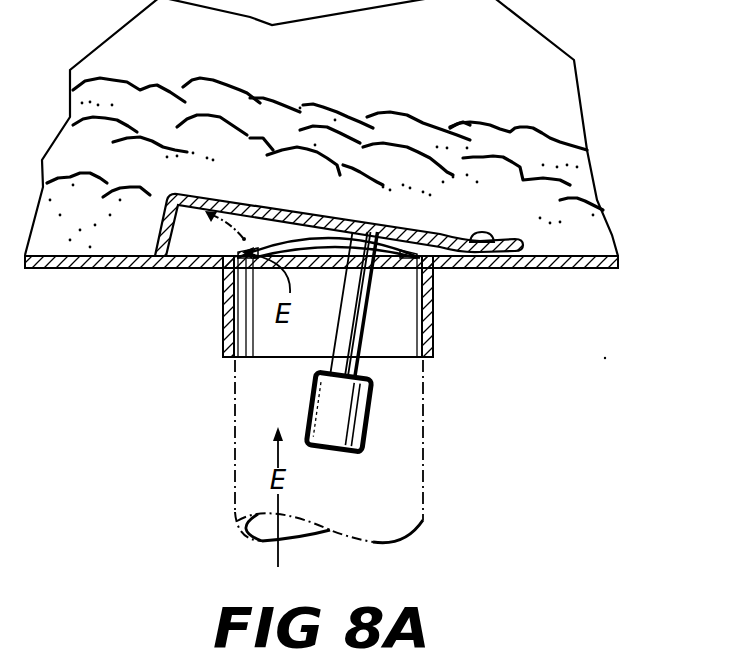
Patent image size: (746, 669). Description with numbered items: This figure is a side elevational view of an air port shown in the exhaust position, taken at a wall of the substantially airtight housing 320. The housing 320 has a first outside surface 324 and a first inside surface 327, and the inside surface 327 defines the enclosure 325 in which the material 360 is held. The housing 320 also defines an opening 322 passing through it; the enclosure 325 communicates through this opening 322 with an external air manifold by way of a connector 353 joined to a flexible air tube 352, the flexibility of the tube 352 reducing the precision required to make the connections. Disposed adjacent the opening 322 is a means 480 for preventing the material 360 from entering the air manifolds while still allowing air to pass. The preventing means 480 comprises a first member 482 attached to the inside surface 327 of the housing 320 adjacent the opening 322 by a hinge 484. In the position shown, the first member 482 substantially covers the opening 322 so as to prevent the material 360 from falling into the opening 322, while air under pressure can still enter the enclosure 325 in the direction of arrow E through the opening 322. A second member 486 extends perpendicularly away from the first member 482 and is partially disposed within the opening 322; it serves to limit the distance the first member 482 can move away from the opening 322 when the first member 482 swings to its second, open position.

The housing 320 is at (100, 277).
The opening 322 is at (433, 296).
The first outside surface 324 is at (595, 270).
The enclosure 325 is at (158, 51).
The first inside surface 327 is at (596, 257).
The flexible air tube 352 is at (425, 470).
The connector 353 is at (223, 333).
The material 360 is at (414, 112).
The means for preventing the material from entering the air manifolds 480 is at (222, 397).
The first member 482 is at (262, 205).
The hinge 484 is at (463, 240).
The second member 486 is at (374, 393).